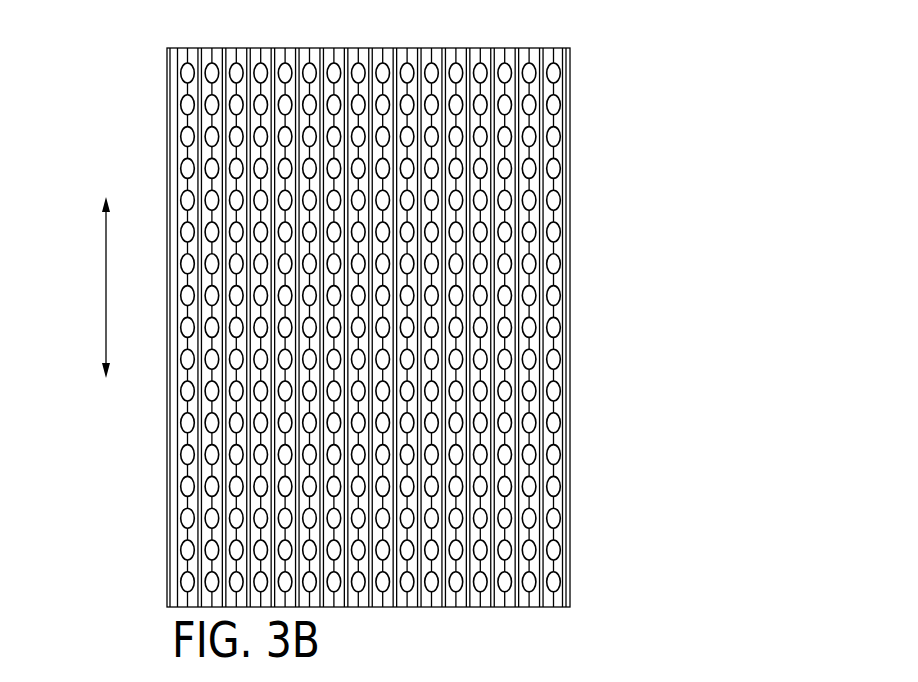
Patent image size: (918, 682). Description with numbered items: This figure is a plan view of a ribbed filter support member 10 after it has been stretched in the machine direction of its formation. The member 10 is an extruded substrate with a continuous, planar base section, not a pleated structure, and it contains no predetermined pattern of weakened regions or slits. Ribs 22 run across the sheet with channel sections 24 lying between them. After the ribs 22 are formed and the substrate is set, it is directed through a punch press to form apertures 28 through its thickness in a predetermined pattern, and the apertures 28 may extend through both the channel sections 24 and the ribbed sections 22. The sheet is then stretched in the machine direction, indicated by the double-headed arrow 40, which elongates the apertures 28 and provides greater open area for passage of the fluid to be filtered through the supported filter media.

The ribbed filter support member 10 is at (478, 303).
The ribs 22 is at (431, 63).
The channel sections 24 is at (550, 57).
The apertures 28 is at (433, 65).
The double-headed arrow 40 is at (106, 285).